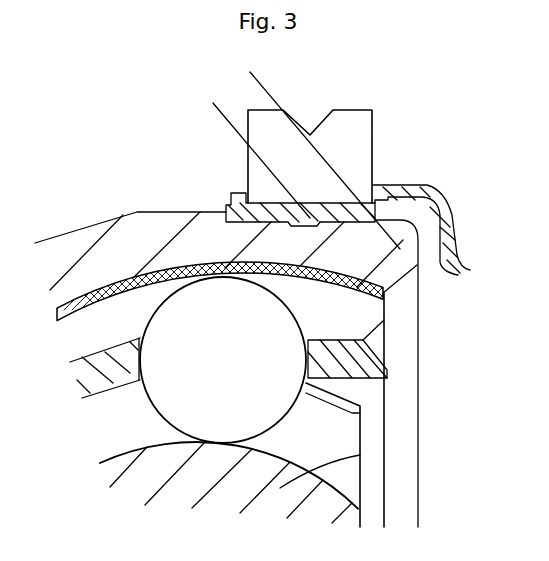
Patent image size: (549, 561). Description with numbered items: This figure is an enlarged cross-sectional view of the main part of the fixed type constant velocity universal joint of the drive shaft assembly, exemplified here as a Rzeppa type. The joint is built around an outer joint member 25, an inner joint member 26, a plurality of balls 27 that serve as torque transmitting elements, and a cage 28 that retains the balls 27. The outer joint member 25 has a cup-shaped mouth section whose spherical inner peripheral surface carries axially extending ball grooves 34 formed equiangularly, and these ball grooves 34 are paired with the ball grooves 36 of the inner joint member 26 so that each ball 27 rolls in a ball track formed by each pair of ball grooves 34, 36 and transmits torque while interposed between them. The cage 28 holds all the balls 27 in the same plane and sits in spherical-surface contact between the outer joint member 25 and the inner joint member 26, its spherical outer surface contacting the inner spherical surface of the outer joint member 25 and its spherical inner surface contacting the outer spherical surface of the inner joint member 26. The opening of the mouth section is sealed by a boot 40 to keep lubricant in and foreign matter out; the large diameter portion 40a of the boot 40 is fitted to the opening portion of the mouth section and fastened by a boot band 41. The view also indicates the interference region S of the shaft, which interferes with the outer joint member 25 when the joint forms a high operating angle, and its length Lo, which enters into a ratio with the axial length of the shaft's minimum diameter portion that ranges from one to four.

The outer joint member 25 is at (93, 223).
The inner joint member 26 is at (342, 497).
The ball 27 is at (185, 317).
The cage 28 is at (365, 373).
The ball groove 34 is at (99, 301).
The ball groove 36 is at (360, 455).
The boot 40 is at (440, 186).
The large diameter portion 40a is at (270, 207).
The boot band 41 is at (350, 132).
The interference region S is at (389, 297).
The length of interference region Lo is at (251, 70).